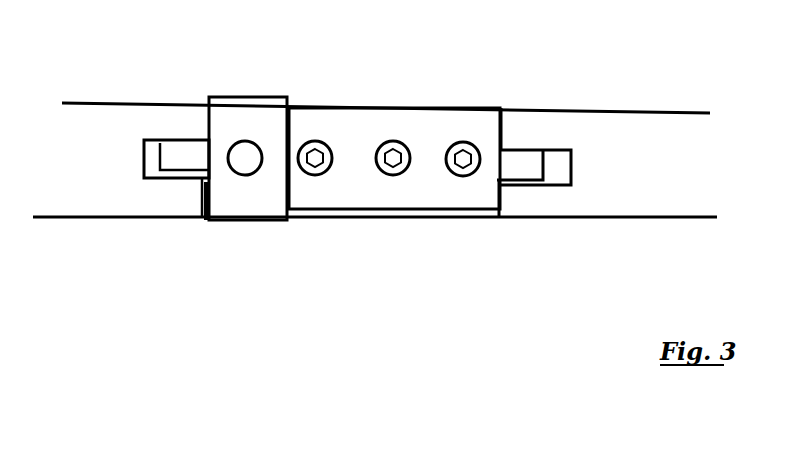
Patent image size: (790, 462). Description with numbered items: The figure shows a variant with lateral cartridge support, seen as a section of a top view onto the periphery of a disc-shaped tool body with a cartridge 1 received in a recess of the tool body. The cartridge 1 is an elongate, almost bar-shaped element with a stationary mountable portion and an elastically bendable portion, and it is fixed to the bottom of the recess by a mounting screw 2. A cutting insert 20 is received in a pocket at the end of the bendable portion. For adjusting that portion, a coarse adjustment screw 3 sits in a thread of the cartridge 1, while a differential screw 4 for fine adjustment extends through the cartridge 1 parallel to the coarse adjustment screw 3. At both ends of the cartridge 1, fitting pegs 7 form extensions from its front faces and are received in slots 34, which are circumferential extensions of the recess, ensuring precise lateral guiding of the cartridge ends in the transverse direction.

The cartridge 1 is at (361, 128).
The mounting screw 2 is at (463, 142).
The coarse adjustment screw 3 is at (305, 143).
The differential screw 4 is at (405, 150).
The fitting peg 7 is at (176, 152).
The cutting insert 20 is at (242, 124).
The slot 34 is at (148, 170).